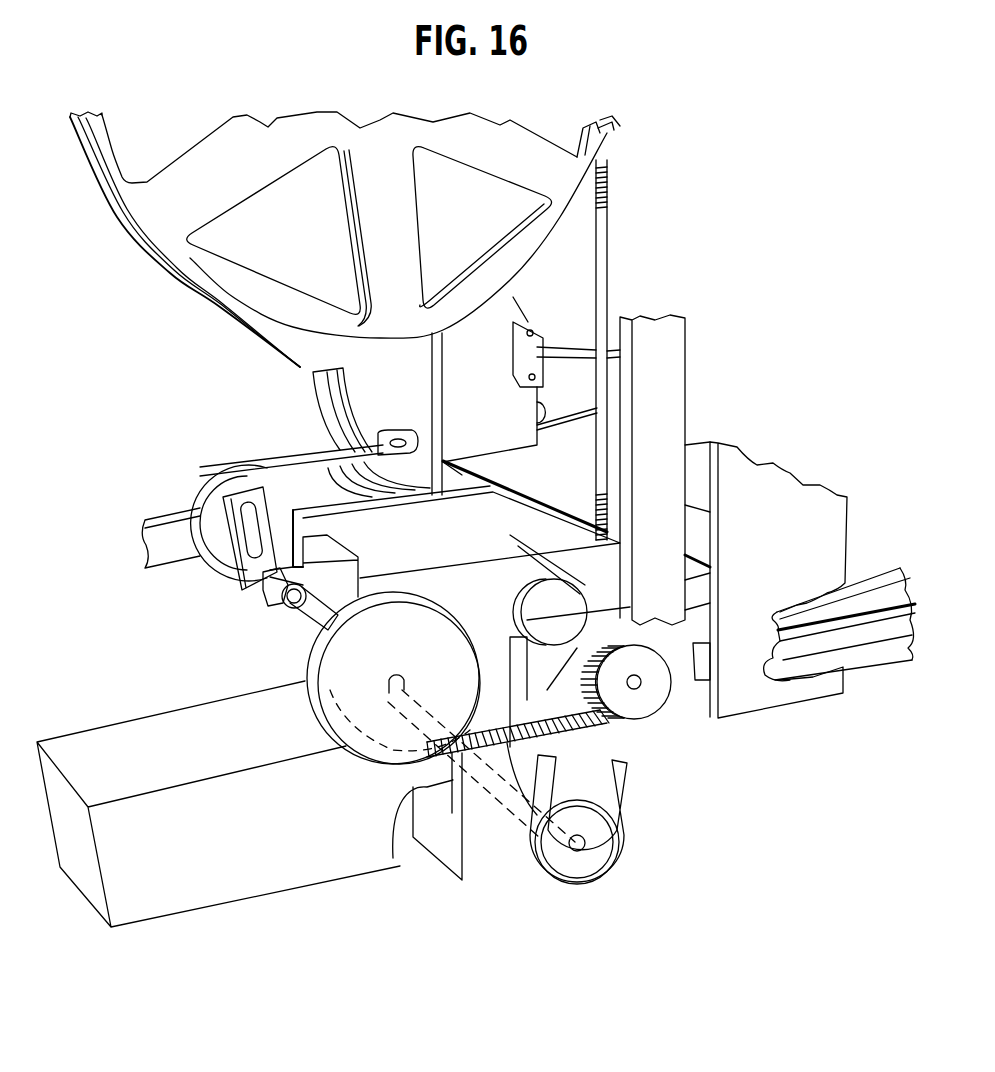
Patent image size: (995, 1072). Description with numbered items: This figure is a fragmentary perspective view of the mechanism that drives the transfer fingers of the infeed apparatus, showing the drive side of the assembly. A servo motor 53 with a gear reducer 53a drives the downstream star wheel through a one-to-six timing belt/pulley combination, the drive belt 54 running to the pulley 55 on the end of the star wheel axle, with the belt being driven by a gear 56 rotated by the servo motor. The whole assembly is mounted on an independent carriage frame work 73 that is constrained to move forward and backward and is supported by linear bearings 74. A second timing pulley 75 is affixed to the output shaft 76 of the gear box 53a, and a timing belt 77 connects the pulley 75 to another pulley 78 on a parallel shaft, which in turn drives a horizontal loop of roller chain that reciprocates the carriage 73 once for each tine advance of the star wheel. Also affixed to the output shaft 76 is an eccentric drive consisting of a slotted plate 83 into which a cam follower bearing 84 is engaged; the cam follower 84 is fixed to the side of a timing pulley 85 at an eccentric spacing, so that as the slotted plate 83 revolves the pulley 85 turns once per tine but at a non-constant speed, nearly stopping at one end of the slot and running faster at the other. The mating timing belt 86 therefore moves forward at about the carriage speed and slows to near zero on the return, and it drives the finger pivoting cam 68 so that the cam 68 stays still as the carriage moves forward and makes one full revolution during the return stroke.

The servo motor 53 is at (273, 880).
The gear reducer 53a is at (450, 830).
The drive belt 54 is at (600, 247).
The pulley 55 is at (600, 140).
The gear 56 is at (620, 855).
The finger pivoting cam 68 is at (310, 400).
The carriage frame work 73 is at (667, 360).
The linear bearings 74 is at (796, 680).
The second timing pulley 75 is at (348, 668).
The output shaft 76 is at (303, 613).
The timing belt 77 is at (510, 800).
The pulley 78 is at (650, 705).
The slotted plate 83 is at (237, 550).
The cam follower bearing 84 is at (242, 520).
The timing pulley 85 is at (263, 468).
The timing belt 86 is at (297, 457).